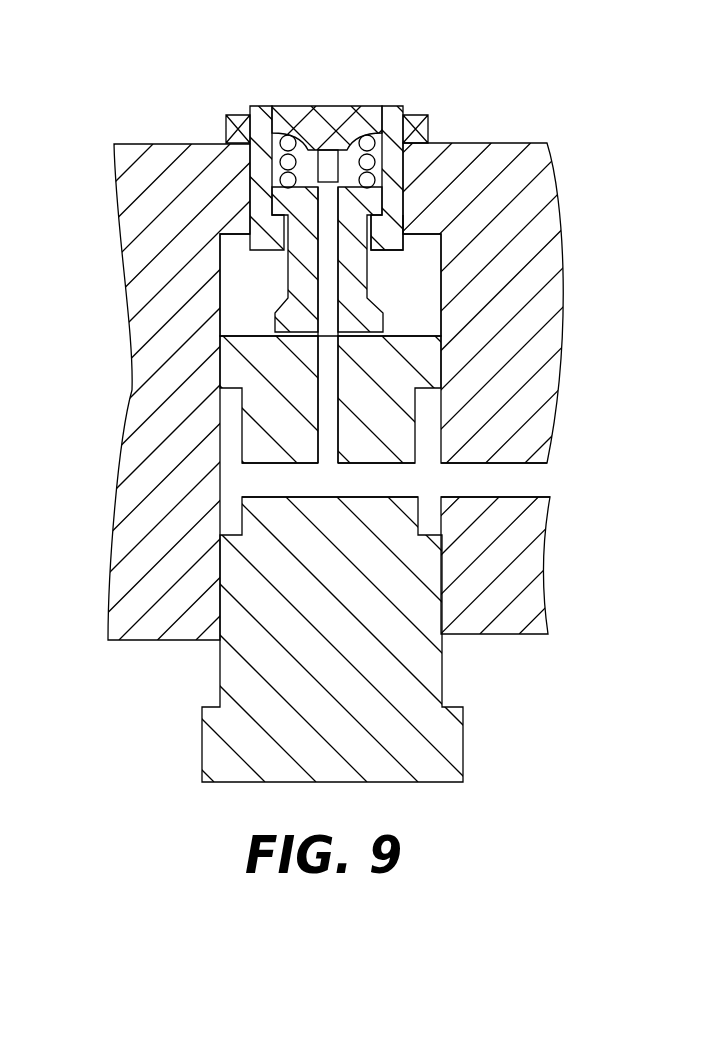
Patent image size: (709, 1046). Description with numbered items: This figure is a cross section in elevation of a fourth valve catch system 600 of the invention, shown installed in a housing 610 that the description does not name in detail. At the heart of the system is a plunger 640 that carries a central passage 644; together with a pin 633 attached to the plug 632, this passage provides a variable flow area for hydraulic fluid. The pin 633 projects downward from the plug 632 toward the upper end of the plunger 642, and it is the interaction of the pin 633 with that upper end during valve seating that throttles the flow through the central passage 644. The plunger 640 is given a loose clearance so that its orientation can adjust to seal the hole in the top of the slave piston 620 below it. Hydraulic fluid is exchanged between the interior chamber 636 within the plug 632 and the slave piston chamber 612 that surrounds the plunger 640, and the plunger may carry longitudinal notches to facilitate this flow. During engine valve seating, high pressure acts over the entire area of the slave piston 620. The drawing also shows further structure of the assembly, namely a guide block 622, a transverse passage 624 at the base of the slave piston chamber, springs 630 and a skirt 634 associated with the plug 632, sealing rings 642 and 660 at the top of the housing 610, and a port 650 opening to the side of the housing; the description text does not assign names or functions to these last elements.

The valve assembly 600 is at (170, 682).
The housing body 610 is at (138, 228).
The slave piston chamber 612 is at (222, 272).
The slave piston 620 is at (423, 666).
The guide block 622 is at (222, 432).
The transverse passage 624 is at (349, 490).
The spring 630 is at (372, 162).
The plug 632 is at (373, 117).
The pin 633 is at (279, 190).
The cap skirt 634 is at (403, 228).
The interior chamber 636 is at (345, 150).
The plunger 640 is at (360, 292).
The upper end of the plunger 642 is at (272, 147).
The central passage 644 is at (330, 268).
The outlet port 650 is at (525, 478).
The seal ring 660 is at (427, 143).